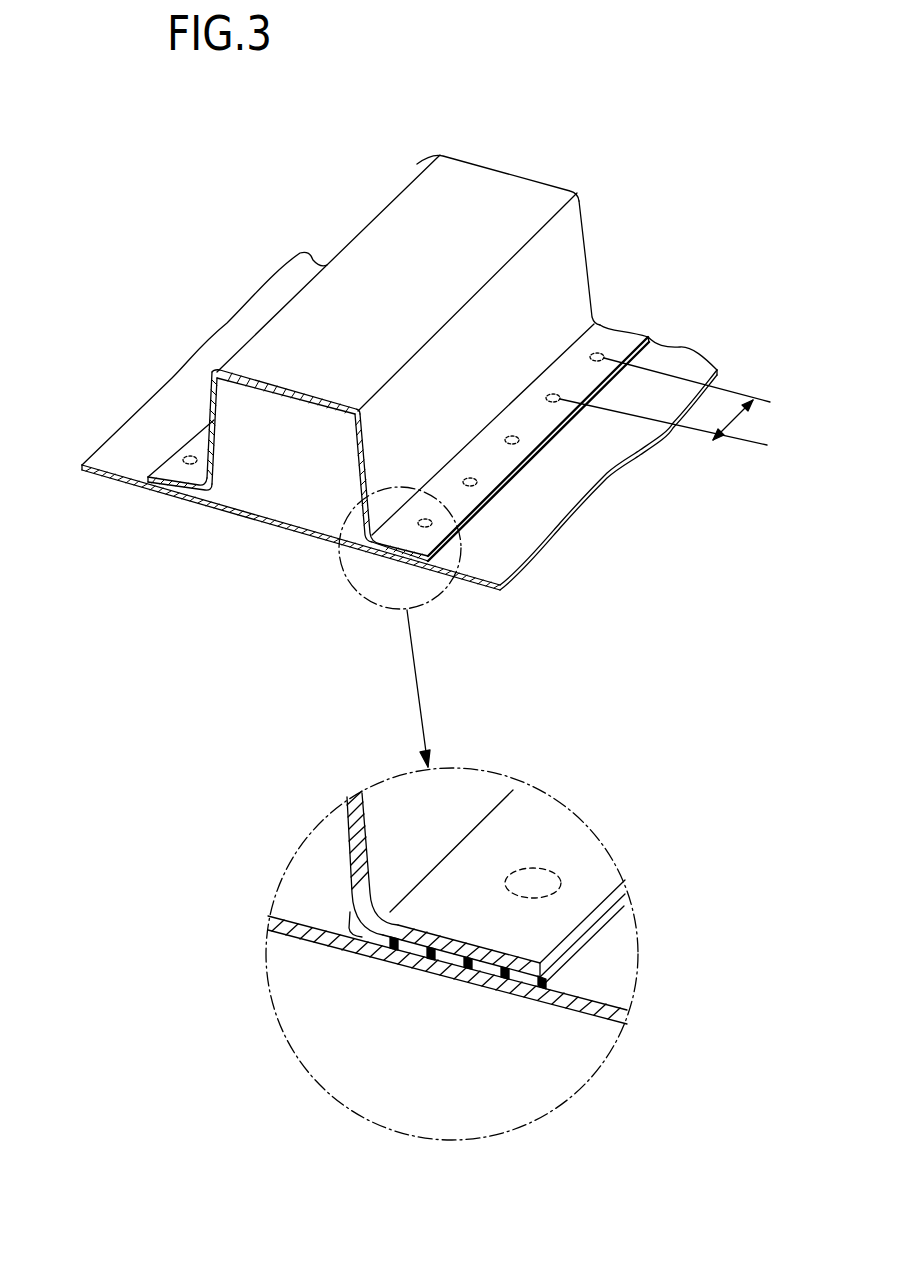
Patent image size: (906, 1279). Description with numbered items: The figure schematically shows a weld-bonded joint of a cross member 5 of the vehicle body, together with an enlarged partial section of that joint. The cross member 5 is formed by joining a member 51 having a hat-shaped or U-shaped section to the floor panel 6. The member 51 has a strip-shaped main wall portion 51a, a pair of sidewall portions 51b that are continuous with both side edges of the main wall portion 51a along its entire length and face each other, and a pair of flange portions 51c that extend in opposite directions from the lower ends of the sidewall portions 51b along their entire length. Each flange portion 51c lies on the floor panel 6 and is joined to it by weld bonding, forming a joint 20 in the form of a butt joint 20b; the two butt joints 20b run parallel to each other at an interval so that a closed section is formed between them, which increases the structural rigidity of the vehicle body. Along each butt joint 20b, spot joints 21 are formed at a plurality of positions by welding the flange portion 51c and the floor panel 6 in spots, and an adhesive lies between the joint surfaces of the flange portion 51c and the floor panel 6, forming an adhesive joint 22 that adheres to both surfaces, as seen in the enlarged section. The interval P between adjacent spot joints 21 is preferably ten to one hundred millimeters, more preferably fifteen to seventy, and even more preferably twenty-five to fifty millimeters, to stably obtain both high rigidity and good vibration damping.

The cross member 5 is at (347, 198).
The member 51 is at (407, 532).
The main wall portion 51a is at (477, 190).
The sidewall portions 51b is at (578, 260).
The flange portions 51c is at (608, 338).
The floor panel 6 is at (675, 363).
The joint 20 is at (471, 596).
The butt joint 20b is at (487, 460).
The spot joint 21 is at (478, 483).
The adhesive joint 22 is at (462, 968).
The interval between the spot joints P is at (665, 404).